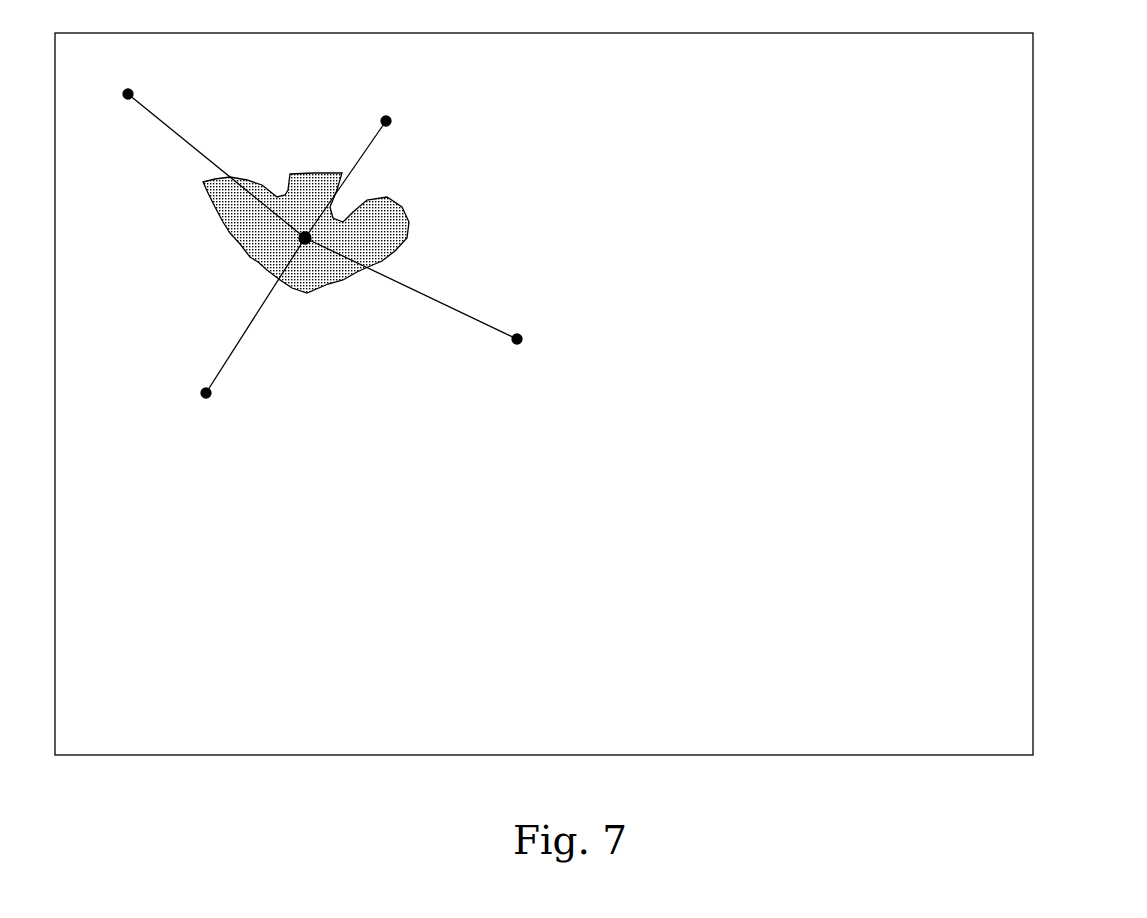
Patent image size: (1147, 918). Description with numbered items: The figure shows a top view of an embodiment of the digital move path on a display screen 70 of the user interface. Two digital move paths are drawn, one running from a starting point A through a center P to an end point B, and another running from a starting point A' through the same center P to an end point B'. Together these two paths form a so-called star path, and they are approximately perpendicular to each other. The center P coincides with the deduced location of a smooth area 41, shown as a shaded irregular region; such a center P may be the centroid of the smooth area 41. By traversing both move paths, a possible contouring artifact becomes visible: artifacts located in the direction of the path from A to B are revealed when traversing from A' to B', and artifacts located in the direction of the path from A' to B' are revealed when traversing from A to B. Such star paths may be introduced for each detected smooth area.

The smooth area 41 is at (217, 215).
The display screen 70 is at (1033, 133).
The starting point A is at (212, 147).
The end point B is at (417, 291).
The starting point A' is at (357, 160).
The end point B' is at (247, 336).
The center P is at (313, 262).